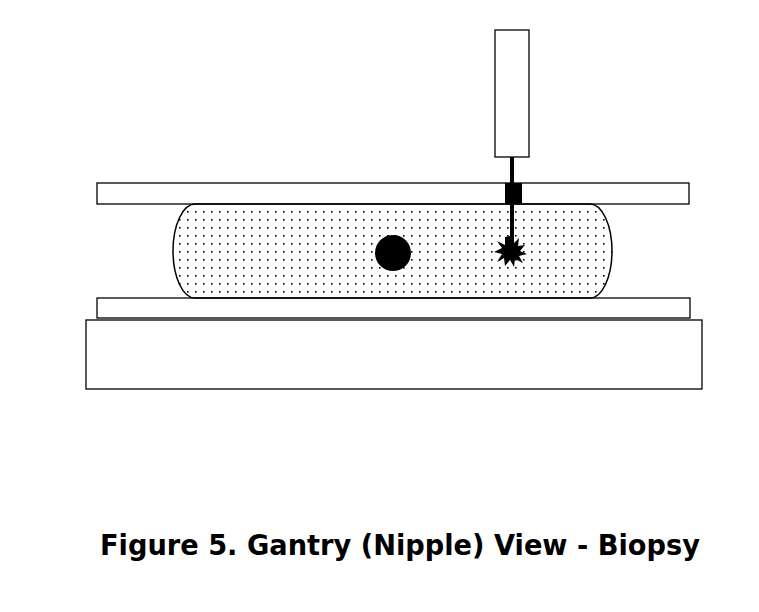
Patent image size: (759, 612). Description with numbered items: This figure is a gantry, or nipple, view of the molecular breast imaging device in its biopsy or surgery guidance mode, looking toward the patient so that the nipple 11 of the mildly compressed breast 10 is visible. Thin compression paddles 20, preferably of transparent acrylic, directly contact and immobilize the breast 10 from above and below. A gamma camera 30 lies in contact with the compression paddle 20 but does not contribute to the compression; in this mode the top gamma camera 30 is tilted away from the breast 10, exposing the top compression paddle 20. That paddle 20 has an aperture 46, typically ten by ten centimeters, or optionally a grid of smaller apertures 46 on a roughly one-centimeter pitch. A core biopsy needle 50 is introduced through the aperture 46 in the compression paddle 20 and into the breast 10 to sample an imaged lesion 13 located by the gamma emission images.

The breast 10 is at (225, 244).
The nipple 11 is at (376, 252).
The imaged lesion 13 is at (520, 245).
The compression paddle 20 is at (419, 252).
The gamma camera 30 is at (580, 361).
The aperture 46 is at (523, 188).
The core biopsy needle 50 is at (505, 142).